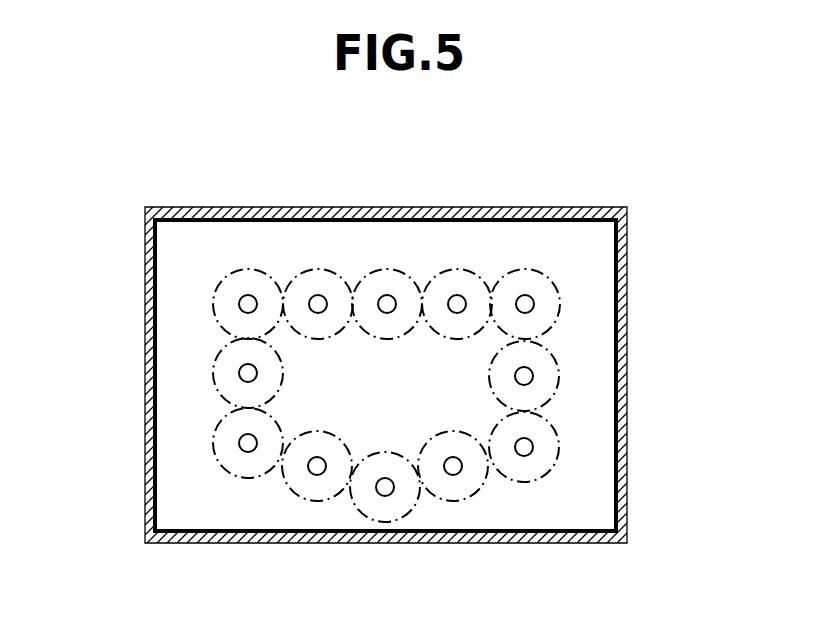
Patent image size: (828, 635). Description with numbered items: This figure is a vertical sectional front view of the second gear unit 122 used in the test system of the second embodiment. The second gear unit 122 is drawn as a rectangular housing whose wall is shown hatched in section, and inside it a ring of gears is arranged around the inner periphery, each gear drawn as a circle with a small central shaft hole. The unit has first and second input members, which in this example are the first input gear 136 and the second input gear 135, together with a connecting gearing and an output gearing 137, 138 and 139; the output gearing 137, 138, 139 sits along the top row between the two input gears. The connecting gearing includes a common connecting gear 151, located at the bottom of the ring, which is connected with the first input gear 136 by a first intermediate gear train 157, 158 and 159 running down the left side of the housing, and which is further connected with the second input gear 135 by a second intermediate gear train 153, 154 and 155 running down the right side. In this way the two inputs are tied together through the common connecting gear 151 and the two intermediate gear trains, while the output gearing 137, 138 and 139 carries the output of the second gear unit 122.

The second gear unit 122 is at (627, 287).
The second input gear 135 is at (528, 271).
The first input gear 136 is at (245, 267).
The output gearing 137 is at (457, 270).
The output gearing 138 is at (322, 266).
The output gearing 139 is at (392, 268).
The common connecting gear 151 is at (365, 516).
The second intermediate gear train 153 is at (453, 501).
The second intermediate gear train 154 is at (560, 447).
The second intermediate gear train 155 is at (560, 377).
The first intermediate gear train 157 is at (297, 496).
The first intermediate gear train 158 is at (223, 468).
The first intermediate gear train 159 is at (213, 373).